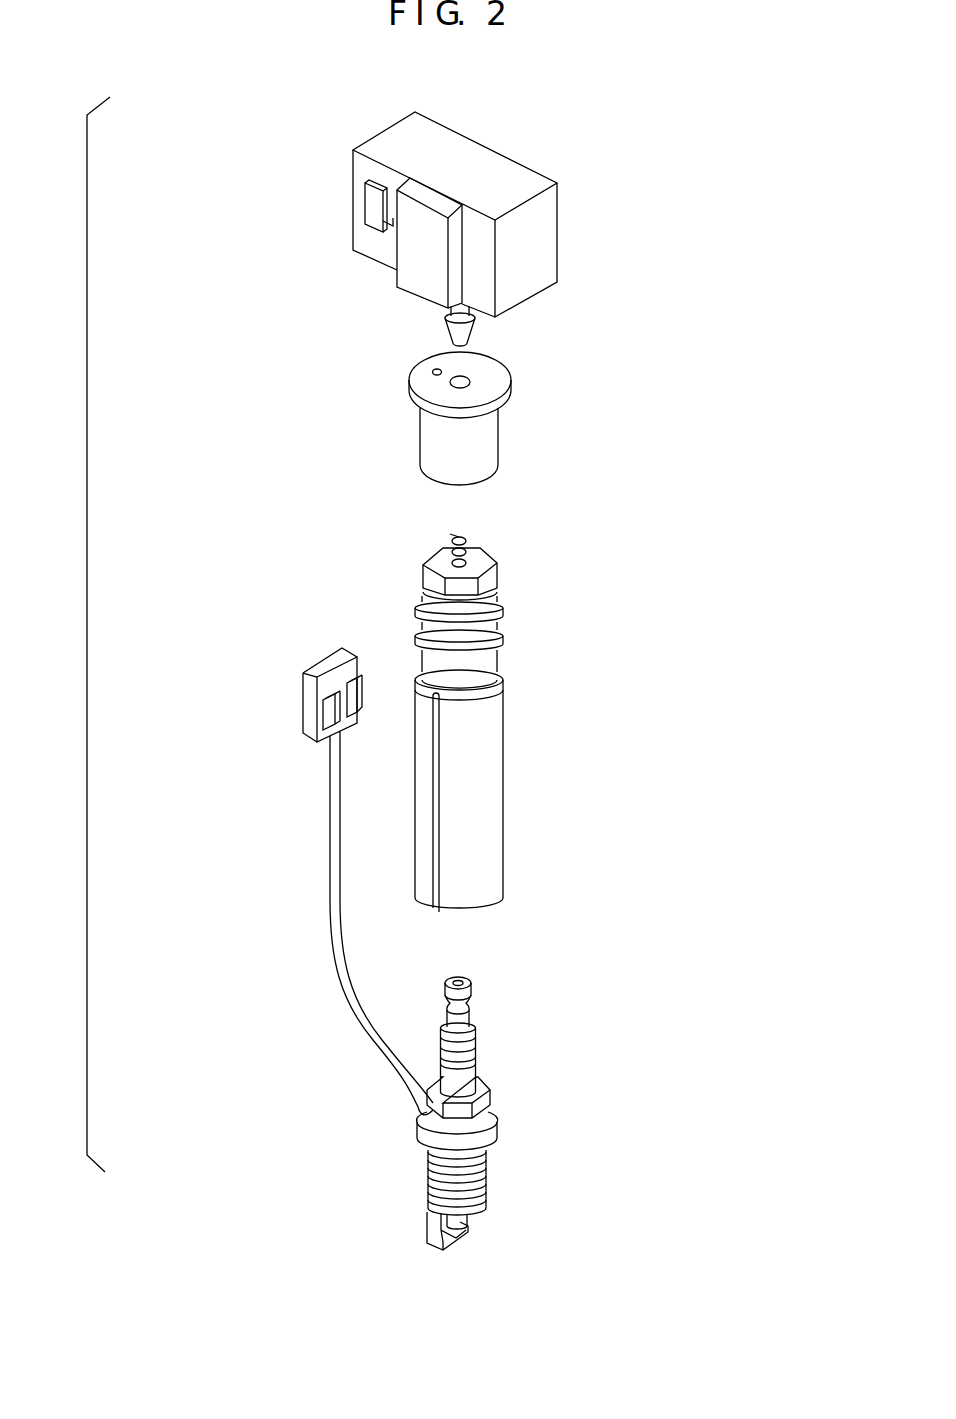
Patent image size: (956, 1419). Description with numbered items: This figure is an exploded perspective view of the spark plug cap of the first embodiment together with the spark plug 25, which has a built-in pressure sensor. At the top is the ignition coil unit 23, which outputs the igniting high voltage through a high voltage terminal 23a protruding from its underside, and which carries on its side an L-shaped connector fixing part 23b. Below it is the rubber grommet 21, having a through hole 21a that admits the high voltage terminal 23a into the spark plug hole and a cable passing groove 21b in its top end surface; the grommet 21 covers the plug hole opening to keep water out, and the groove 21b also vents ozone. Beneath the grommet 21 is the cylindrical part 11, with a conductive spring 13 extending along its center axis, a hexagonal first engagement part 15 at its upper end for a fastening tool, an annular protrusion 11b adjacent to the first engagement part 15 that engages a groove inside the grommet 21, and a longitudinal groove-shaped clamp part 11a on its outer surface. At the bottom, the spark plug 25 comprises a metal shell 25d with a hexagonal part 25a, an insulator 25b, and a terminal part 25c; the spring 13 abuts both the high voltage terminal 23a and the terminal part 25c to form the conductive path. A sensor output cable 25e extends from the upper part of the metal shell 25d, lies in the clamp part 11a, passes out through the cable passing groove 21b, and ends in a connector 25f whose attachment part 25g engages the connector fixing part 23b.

The cylindrical part 11 is at (546, 727).
The clamp part 11a is at (435, 868).
The annular protrusion 11b is at (500, 607).
The spring 13 is at (463, 535).
The first engagement part 15 is at (490, 572).
The rubber grommet 21 is at (478, 405).
The through hole 21a is at (457, 379).
The cable passing groove 21b is at (392, 429).
The ignition coil unit 23 is at (418, 220).
The high voltage terminal 23a is at (377, 320).
The connector fixing part 23b is at (370, 205).
The spark plug 25 is at (520, 1096).
The hexagonal part 25a is at (487, 1078).
The insulator 25b is at (473, 1053).
The terminal part 25c is at (470, 990).
The metal shell 25d is at (358, 1150).
The sensor output cable 25e is at (318, 945).
The connector 25f is at (309, 656).
The attachment part 25g is at (359, 662).